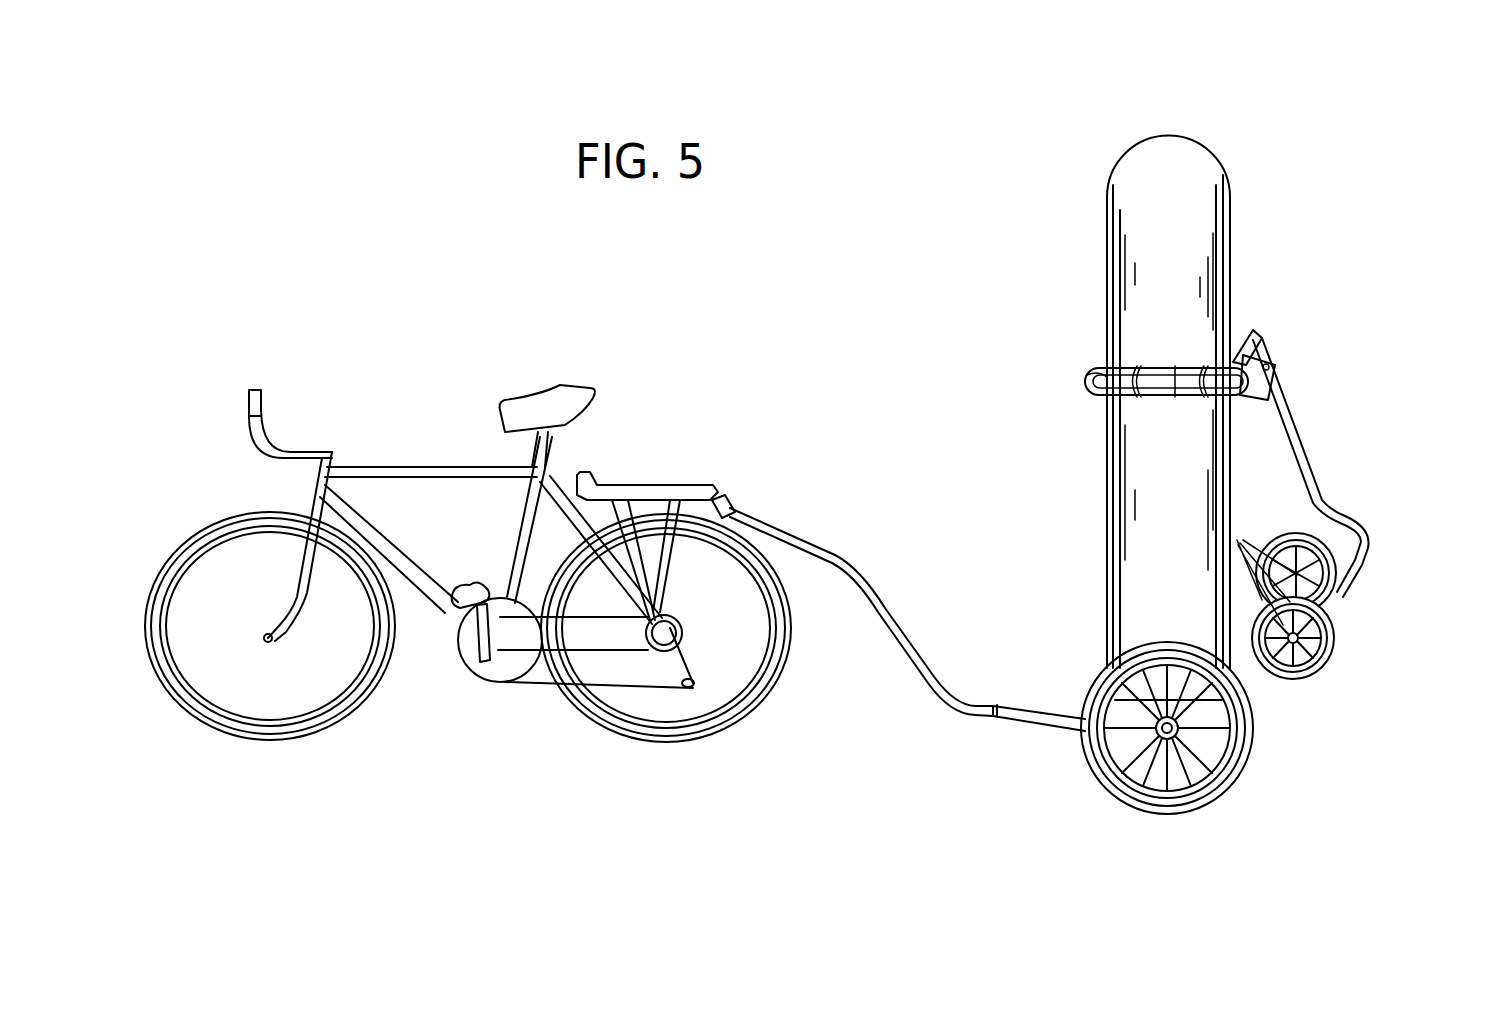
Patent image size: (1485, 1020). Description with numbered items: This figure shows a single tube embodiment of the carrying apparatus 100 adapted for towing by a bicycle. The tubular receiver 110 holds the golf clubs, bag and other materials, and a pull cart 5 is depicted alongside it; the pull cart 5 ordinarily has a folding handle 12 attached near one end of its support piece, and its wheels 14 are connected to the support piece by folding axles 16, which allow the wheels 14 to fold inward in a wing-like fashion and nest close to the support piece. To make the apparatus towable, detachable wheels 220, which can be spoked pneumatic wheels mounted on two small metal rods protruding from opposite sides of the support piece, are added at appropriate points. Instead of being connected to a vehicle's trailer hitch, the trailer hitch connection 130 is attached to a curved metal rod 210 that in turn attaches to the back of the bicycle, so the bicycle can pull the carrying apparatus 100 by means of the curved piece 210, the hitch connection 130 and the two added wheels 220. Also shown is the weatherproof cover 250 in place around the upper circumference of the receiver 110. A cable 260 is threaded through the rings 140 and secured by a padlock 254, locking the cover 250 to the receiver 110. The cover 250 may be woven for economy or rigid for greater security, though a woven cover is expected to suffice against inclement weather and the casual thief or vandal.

The pull cart 5 is at (1322, 256).
The folding handle 12 is at (1285, 417).
The wheels 14 is at (1335, 630).
The folding axles 16 is at (1245, 545).
The carrying apparatus 100 is at (1330, 687).
The receiver 110 is at (1107, 482).
The trailer hitch connection 130 is at (1033, 712).
The rings 140 is at (1120, 398).
The curved metal rod 210 is at (830, 553).
The detachable wheels 220 is at (1255, 752).
The weatherproof cover 250 is at (1210, 184).
The padlock 254 is at (1268, 380).
The cable 260 is at (1105, 372).